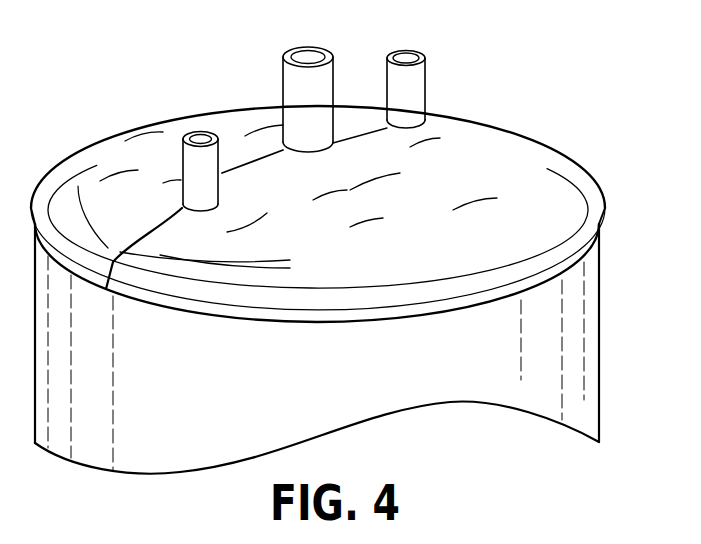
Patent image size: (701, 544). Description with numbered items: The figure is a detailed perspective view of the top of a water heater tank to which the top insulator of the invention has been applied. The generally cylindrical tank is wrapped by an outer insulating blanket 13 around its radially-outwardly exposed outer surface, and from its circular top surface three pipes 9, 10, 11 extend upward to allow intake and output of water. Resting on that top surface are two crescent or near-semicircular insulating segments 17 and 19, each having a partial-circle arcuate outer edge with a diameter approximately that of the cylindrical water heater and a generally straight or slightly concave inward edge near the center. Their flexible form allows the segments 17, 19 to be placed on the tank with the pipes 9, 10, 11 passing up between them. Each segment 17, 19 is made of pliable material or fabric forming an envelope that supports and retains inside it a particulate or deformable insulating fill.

The pipe 9 is at (188, 168).
The pipe 10 is at (322, 73).
The pipe 11 is at (417, 72).
The outer insulating blanket 13 is at (577, 342).
The insulating segment 17 is at (77, 182).
The insulating segment 19 is at (545, 180).